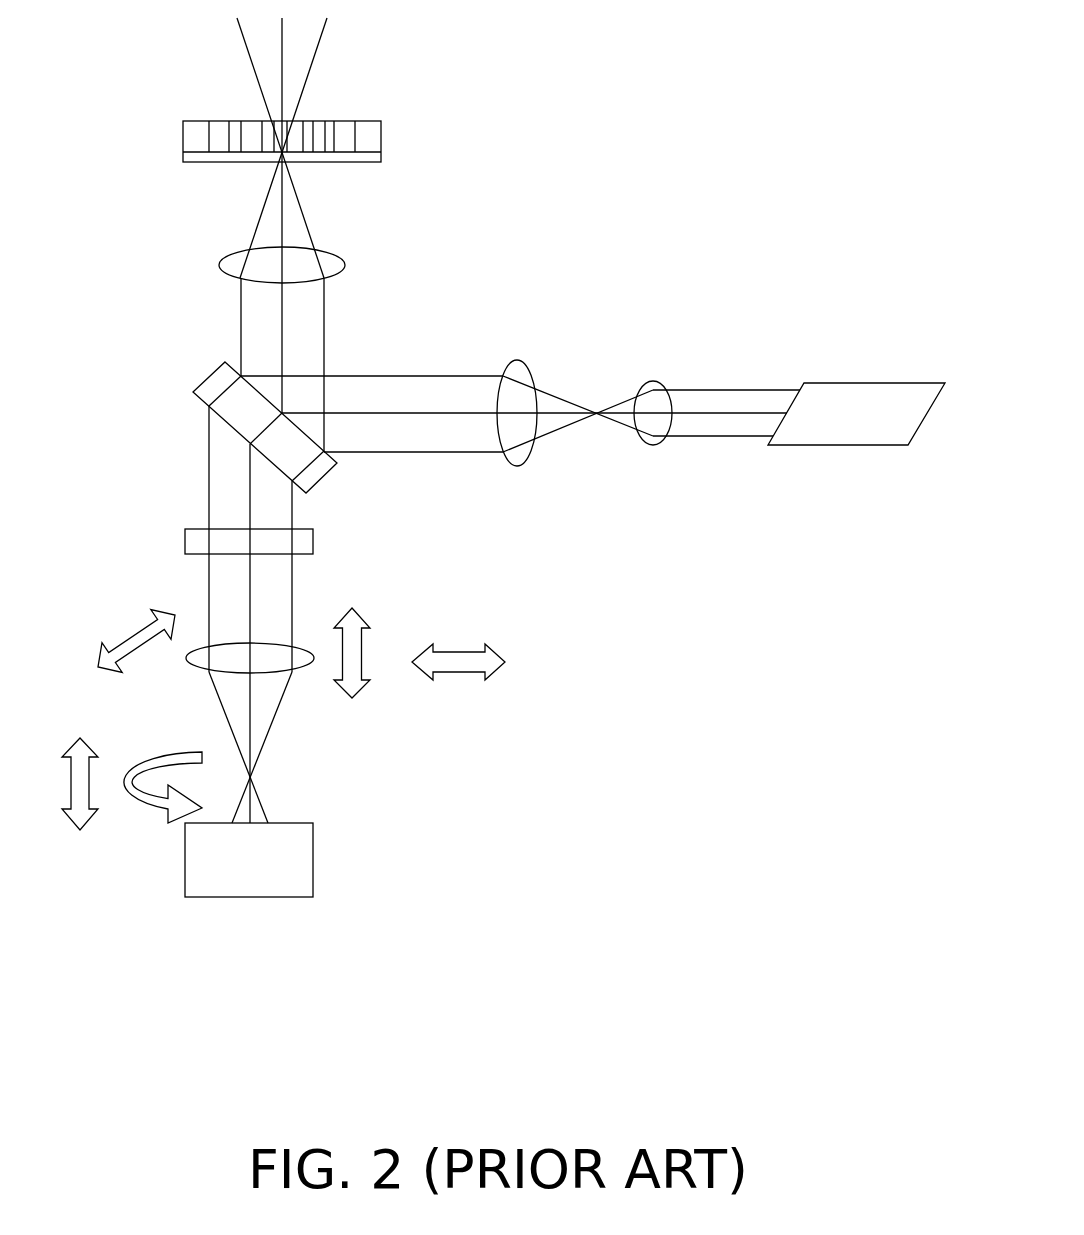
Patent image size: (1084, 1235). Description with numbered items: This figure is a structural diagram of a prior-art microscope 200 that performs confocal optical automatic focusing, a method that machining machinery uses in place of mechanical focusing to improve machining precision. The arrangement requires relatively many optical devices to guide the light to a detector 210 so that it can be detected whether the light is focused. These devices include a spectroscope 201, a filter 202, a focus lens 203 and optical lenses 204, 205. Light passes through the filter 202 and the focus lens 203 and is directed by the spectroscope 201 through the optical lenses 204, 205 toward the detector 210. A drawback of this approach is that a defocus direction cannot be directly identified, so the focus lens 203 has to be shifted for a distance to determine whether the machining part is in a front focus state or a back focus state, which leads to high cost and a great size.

The optical inspection system 200 is at (880, 907).
The spectroscope 201 is at (208, 397).
The filter 202 is at (197, 535).
The focus lens 203 is at (200, 660).
The optical lens 204 is at (530, 372).
The optical lens 205 is at (653, 380).
The detector 210 is at (283, 866).